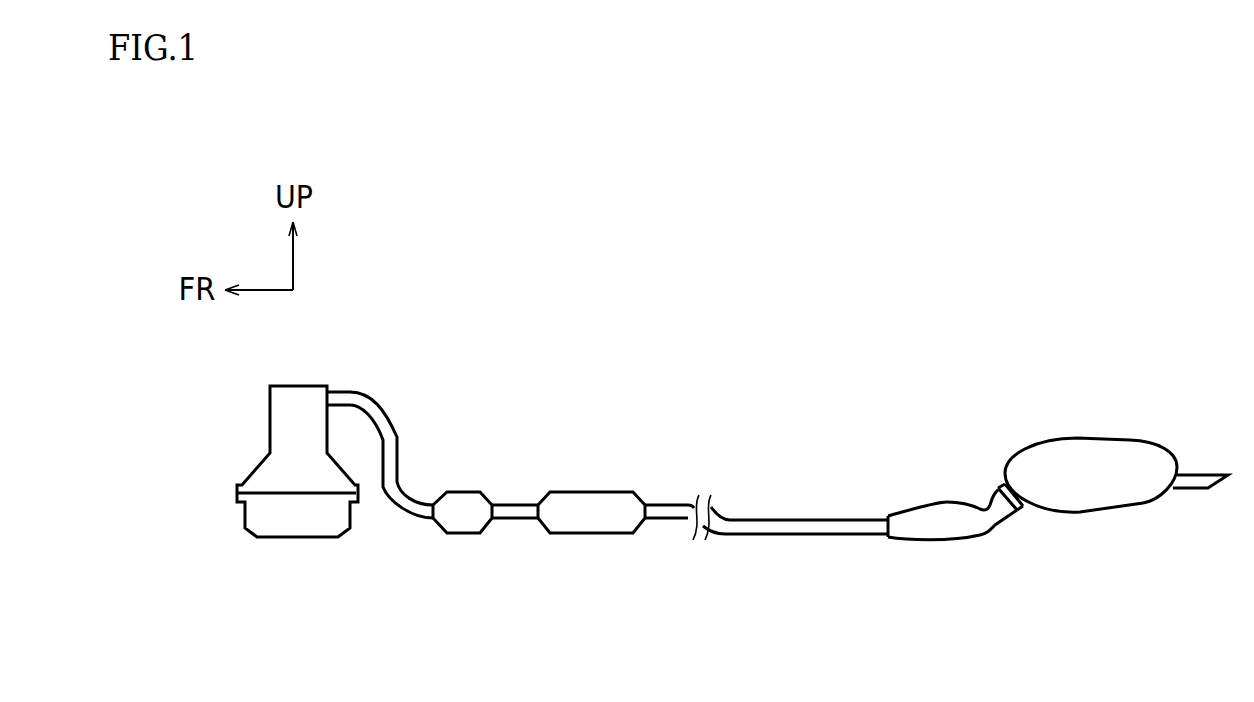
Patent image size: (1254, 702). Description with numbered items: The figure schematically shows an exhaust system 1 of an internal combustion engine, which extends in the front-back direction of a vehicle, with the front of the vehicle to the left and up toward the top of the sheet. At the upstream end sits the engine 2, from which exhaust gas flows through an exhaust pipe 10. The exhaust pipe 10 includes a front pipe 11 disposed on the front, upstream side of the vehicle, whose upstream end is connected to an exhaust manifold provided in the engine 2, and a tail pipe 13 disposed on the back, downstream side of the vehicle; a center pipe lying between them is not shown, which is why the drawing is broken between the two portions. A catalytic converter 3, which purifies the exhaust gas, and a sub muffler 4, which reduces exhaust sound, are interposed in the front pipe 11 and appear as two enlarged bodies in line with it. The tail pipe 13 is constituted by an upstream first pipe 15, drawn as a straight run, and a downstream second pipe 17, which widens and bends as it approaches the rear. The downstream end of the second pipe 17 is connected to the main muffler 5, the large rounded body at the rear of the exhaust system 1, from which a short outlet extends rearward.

The exhaust system 1 is at (994, 358).
The engine 2 is at (270, 402).
The catalytic converter 3 is at (463, 533).
The sub muffler 4 is at (607, 533).
The main muffler 5 is at (1132, 440).
The exhaust pipe 10 is at (865, 350).
The front pipe 11 is at (395, 470).
The tail pipe 13 is at (790, 415).
The first pipe 15 is at (800, 525).
The second pipe 17 is at (947, 500).